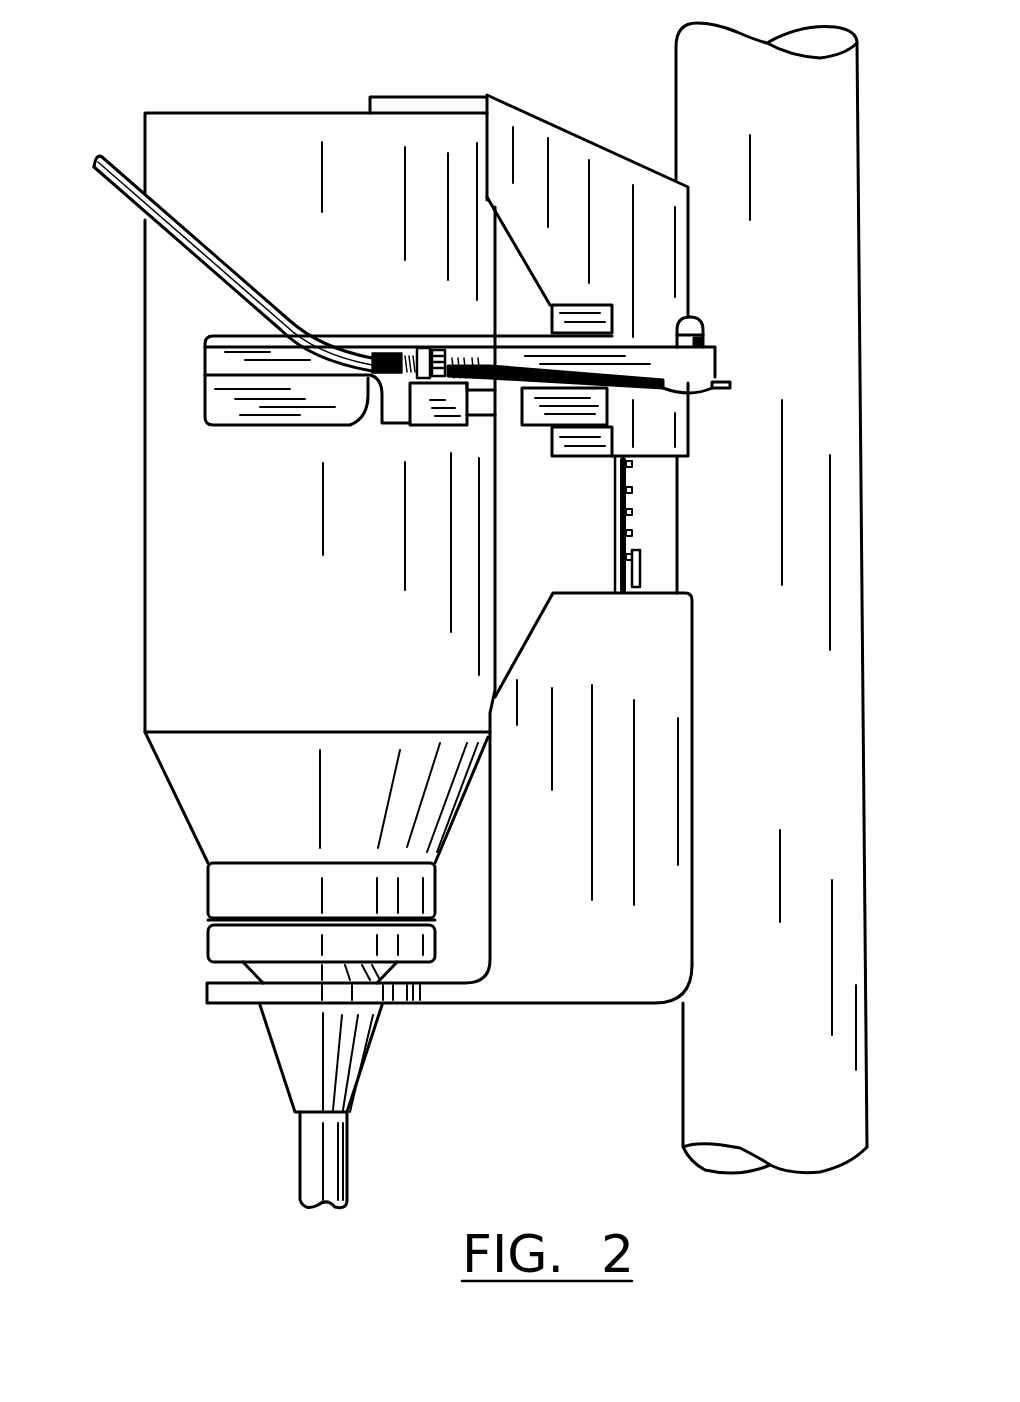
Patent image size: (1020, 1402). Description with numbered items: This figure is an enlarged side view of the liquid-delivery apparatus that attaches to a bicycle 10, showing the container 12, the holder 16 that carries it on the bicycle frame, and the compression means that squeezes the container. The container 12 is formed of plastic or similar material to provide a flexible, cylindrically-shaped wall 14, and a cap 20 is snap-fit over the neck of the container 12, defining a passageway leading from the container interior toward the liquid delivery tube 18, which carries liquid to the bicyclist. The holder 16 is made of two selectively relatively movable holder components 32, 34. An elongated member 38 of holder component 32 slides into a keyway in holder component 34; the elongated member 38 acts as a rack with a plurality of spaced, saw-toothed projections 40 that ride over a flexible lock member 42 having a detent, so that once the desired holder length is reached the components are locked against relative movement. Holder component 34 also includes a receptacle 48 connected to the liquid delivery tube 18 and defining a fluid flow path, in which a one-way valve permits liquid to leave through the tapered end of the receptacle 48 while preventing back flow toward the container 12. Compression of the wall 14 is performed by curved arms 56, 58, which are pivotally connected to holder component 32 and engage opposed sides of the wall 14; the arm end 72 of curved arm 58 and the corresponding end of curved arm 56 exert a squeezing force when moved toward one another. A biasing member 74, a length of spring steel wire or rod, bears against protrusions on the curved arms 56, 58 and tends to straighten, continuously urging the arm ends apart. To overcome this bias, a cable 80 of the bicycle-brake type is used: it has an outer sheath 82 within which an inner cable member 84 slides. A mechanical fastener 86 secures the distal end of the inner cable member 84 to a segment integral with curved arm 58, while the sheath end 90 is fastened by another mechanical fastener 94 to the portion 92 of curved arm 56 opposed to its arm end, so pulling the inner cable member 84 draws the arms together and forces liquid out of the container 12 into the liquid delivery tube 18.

The bicycle 10 is at (773, 1060).
The container 12 is at (212, 483).
The wall 14 is at (320, 637).
The holder 16 is at (696, 770).
The liquid delivery tube 18 is at (313, 1180).
The cap 20 is at (230, 945).
The holder component 32 is at (598, 192).
The holder component 34 is at (653, 663).
The elongated member 38 is at (615, 475).
The projections 40 is at (632, 470).
The flexible lock member 42 is at (638, 573).
The receptacle 48 is at (295, 1047).
The curved arm 56 is at (502, 403).
The curved arm 58 is at (367, 390).
The arm end 72 is at (220, 400).
The biasing member 74 is at (528, 393).
The cable 80 is at (173, 228).
The outer sheath 82 is at (193, 254).
The inner cable member 84 is at (712, 390).
The mechanical fastener 86 is at (703, 332).
The sheath end 90 is at (342, 357).
The arm portion 92 is at (410, 395).
The mechanical fastener 94 is at (425, 350).